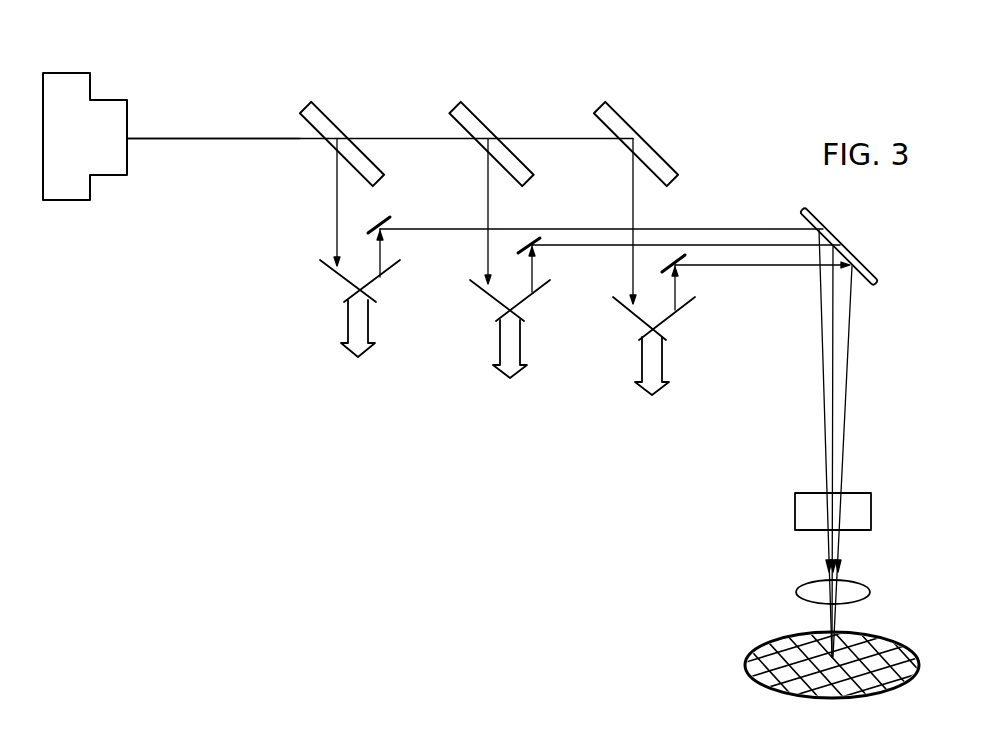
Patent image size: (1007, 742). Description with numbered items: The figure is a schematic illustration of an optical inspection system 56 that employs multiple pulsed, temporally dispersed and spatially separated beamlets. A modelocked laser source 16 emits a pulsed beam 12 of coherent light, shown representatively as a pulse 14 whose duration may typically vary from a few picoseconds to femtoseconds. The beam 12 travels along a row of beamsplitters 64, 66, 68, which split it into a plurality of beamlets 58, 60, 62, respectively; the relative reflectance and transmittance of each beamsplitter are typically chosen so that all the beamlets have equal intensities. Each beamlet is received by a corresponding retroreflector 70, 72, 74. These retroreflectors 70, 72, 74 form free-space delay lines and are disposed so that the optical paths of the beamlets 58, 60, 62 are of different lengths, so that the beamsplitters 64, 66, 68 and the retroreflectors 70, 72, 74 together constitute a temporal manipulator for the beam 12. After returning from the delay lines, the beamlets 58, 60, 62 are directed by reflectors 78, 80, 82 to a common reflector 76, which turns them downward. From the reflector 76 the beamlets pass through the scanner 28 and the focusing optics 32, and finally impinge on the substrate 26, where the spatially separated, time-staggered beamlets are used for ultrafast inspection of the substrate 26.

The pulsed beam 12 is at (200, 139).
The pulse 14 is at (147, 132).
The modelocked laser source 16 is at (71, 73).
The substrate 26 is at (900, 650).
The scanner 28 is at (795, 508).
The focusing optics 32 is at (796, 590).
The optical inspection system 56 is at (765, 115).
The beamlet 58 is at (337, 176).
The beamlet 60 is at (488, 173).
The beamlet 62 is at (633, 184).
The beamsplitter 64 is at (321, 112).
The beamsplitter 66 is at (469, 112).
The beamsplitter 68 is at (613, 113).
The retroreflector 70 is at (343, 283).
The retroreflector 72 is at (493, 301).
The retroreflector 74 is at (635, 318).
The reflector 76 is at (852, 258).
The reflector 78 is at (368, 230).
The reflector 80 is at (519, 253).
The reflector 82 is at (664, 271).